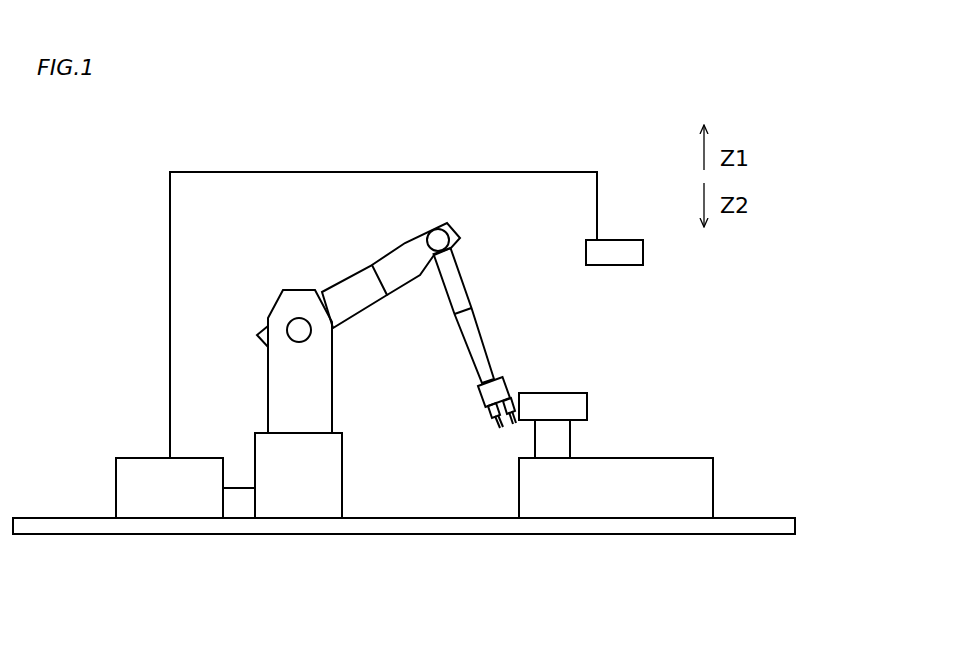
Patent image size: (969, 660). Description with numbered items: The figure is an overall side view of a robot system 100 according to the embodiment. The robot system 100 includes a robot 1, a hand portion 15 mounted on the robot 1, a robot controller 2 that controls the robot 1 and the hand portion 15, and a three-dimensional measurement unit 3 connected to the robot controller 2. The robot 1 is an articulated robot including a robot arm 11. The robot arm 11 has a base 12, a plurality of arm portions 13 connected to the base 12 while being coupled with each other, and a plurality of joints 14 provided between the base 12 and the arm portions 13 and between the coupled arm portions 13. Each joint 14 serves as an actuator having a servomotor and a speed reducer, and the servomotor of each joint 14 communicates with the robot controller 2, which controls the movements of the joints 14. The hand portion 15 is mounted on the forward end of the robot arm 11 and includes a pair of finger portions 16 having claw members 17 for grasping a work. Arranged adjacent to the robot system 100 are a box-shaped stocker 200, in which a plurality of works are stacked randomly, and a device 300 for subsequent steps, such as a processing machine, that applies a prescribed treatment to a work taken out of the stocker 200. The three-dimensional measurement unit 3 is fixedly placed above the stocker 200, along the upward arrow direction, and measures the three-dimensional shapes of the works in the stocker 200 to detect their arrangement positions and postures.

The robot system 100 is at (580, 148).
The robot 1 is at (325, 285).
The robot controller 2 is at (113, 473).
The three-dimensional measurement unit 3 is at (643, 253).
The robot arm 11 is at (363, 290).
The base 12 is at (300, 507).
The arm portions 13 is at (390, 260).
The joints 14 is at (297, 323).
The hand portion 15 is at (495, 397).
The finger portions 16 is at (514, 396).
The claw members 17 is at (514, 428).
The stocker 200 is at (713, 495).
The device for subsequent steps 300 is at (580, 393).